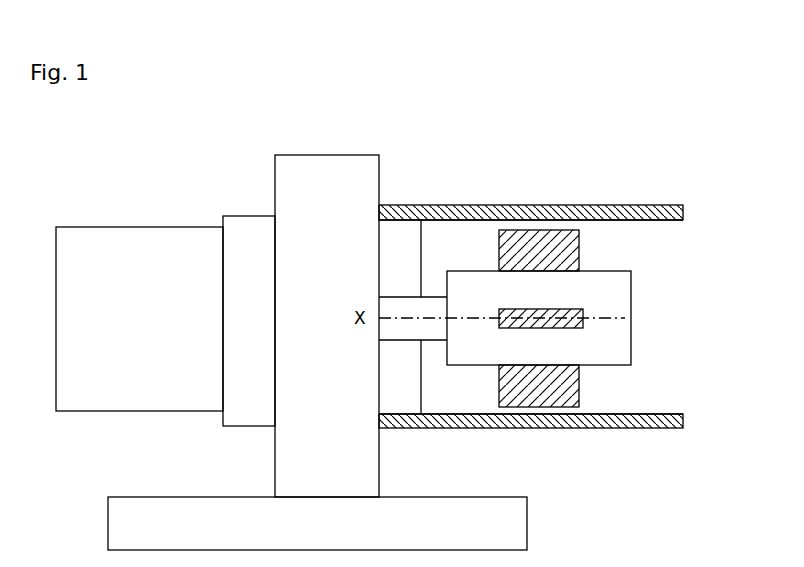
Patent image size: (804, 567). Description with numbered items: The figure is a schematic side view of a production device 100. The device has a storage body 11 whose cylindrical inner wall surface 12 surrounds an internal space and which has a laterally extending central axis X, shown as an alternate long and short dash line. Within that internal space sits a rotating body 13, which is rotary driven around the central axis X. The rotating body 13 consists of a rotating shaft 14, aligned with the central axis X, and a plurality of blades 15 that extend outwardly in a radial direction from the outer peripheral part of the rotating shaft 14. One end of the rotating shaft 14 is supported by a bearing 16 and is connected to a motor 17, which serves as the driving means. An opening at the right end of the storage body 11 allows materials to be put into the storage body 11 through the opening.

The production device 100 is at (123, 132).
The storage body 11 is at (665, 205).
The cylindrical inner wall surface 12 is at (653, 221).
The rotating body 13 is at (559, 254).
The rotating shaft 14 is at (597, 271).
The blades 15 is at (615, 153).
The bearing 16 is at (275, 186).
The motor 17 is at (133, 411).